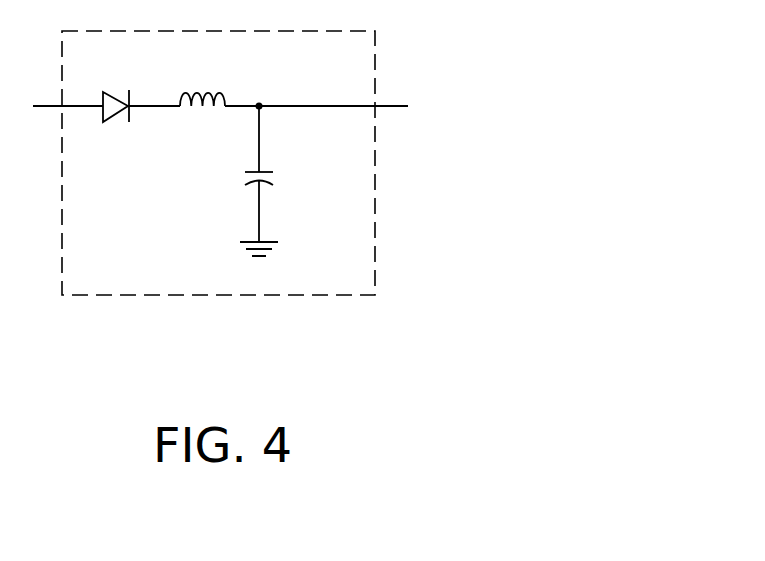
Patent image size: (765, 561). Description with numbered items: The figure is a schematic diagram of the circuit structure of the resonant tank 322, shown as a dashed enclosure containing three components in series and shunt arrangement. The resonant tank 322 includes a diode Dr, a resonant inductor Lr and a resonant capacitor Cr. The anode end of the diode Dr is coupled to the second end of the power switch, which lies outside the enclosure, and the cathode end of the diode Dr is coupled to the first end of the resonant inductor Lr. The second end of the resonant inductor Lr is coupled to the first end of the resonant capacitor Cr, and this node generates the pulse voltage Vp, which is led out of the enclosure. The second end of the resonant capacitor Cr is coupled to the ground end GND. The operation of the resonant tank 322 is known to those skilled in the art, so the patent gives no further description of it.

The resonant tank 322 is at (376, 225).
The diode Dr is at (116, 89).
The resonant inductor Lr is at (202, 81).
The resonant capacitor Cr is at (275, 174).
The pulse voltage Vp is at (425, 108).
The ground end GND is at (260, 265).